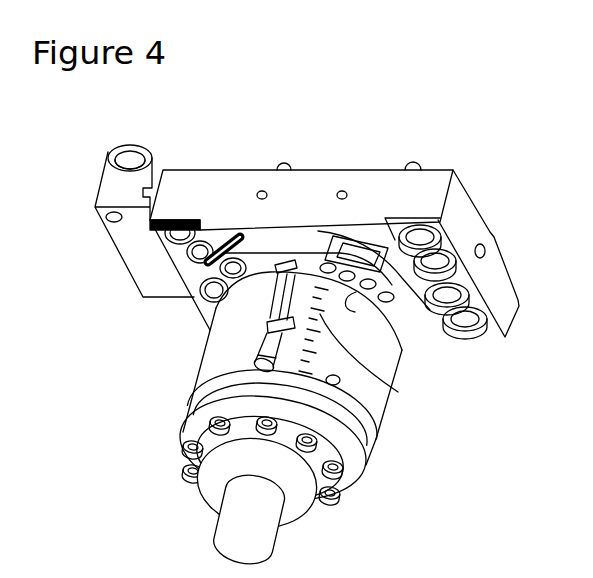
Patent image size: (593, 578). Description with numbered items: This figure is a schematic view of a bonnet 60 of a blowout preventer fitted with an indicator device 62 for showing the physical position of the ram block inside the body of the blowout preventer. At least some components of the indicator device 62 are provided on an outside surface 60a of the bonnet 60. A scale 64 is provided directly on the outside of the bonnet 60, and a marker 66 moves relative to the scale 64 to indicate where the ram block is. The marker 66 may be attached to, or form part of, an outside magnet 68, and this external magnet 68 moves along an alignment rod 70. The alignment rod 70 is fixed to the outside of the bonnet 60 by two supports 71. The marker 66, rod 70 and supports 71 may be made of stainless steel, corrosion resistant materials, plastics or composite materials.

The bonnet 60 is at (243, 345).
The outside surface 60a is at (257, 283).
The indicator device 62 is at (375, 398).
The scale 64 is at (365, 392).
The marker 66 is at (305, 318).
The outside magnet 68 is at (285, 262).
The alignment rod 70 is at (267, 333).
The supports 71 is at (283, 318).